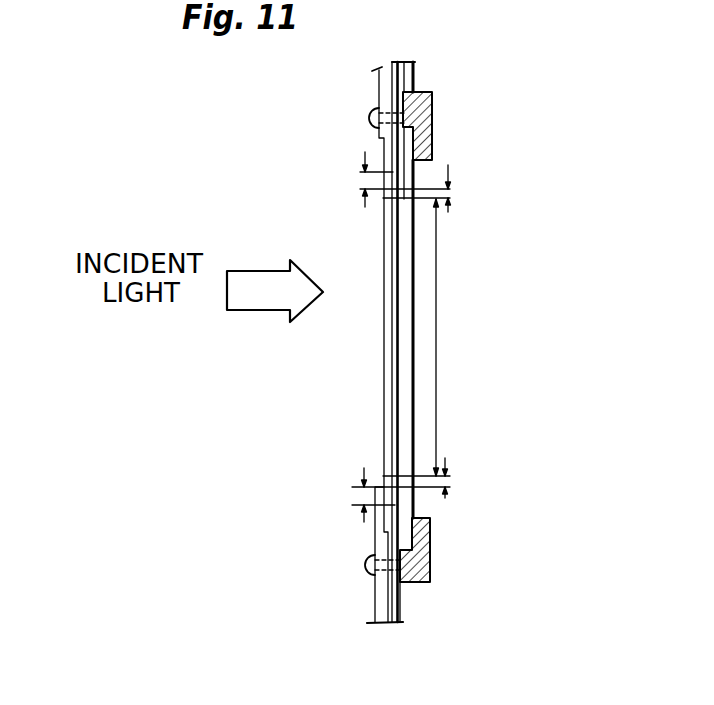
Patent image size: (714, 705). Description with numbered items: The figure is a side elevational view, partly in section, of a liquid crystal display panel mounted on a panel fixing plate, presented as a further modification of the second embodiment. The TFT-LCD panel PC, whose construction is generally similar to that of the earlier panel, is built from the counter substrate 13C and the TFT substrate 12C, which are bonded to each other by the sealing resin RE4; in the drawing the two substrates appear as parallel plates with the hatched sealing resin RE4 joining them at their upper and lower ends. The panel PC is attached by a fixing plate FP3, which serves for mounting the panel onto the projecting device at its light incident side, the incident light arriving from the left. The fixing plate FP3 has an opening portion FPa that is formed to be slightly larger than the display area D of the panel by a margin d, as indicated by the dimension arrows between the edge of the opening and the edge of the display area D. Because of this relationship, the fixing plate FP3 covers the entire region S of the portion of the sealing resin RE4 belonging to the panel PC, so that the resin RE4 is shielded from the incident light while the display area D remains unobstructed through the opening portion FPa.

The fixing plate FP3 is at (373, 140).
The opening portion FPa is at (381, 190).
The sealing resin RE4 is at (415, 168).
The counter substrate 13C is at (389, 300).
The TFT substrate 12C is at (405, 368).
The TFT-LCD panel PC is at (484, 351).
The region of the sealing resin portion S is at (392, 337).
The margin d is at (429, 331).
The display area D is at (434, 337).